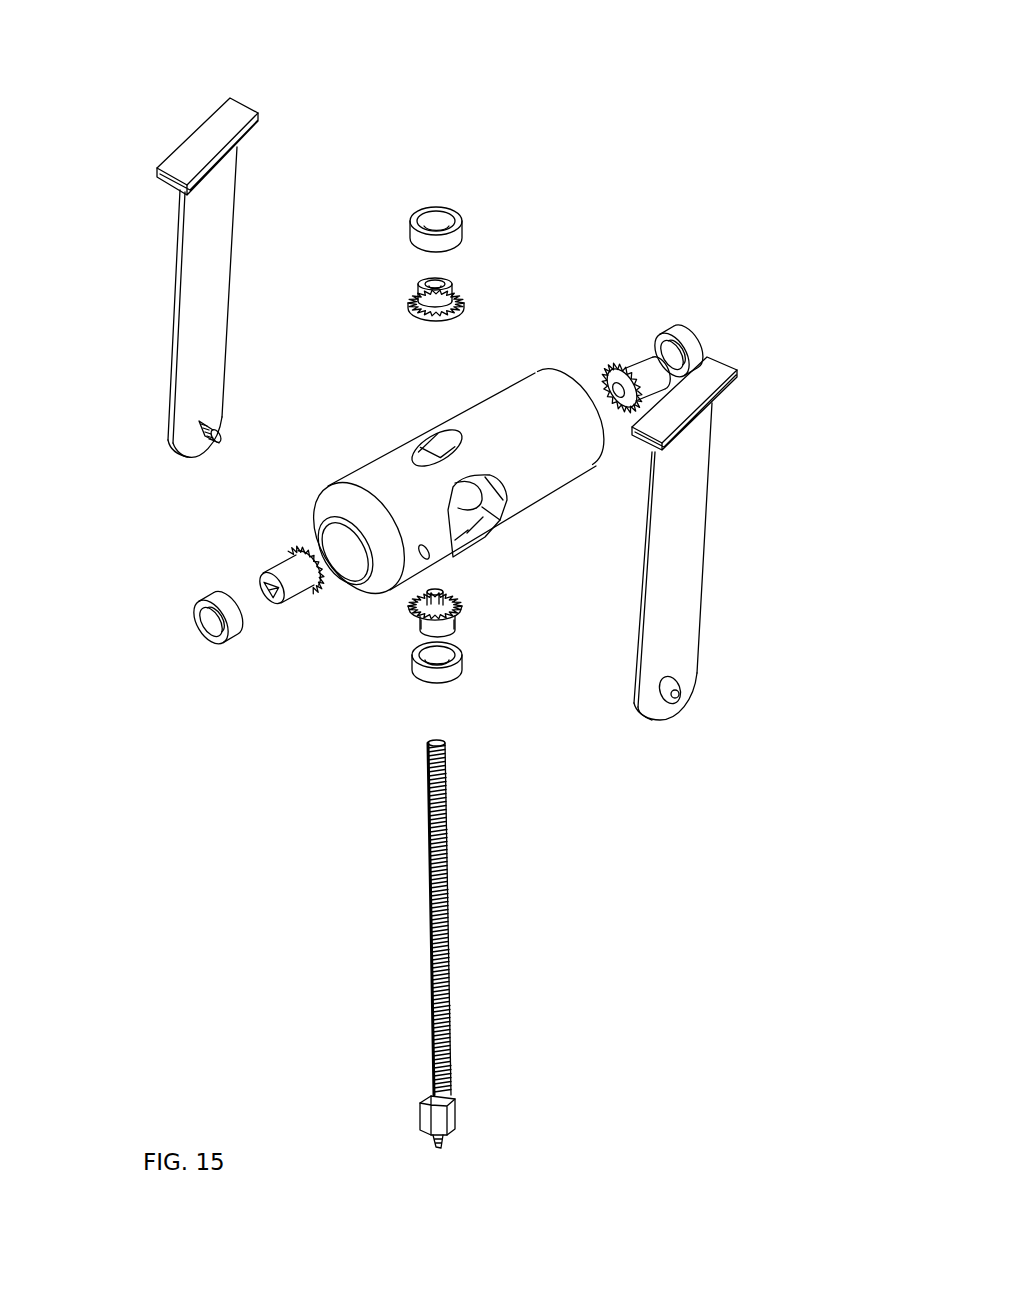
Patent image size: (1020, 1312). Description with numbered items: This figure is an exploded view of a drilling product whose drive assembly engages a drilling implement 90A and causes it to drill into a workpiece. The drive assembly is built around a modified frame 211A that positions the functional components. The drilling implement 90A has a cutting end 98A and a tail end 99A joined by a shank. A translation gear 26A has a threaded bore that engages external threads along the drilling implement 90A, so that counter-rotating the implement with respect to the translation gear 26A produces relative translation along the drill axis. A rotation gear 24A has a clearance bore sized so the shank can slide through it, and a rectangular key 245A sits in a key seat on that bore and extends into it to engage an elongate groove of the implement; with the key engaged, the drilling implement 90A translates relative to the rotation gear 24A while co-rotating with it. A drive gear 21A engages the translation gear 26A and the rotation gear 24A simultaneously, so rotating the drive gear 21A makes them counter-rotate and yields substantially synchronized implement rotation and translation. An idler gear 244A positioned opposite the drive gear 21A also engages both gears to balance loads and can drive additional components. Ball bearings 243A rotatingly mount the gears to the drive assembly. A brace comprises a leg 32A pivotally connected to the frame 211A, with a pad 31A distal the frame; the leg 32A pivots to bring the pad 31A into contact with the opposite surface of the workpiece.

The frame 211A is at (367, 462).
The pad 31A is at (195, 128).
The leg 32A is at (703, 566).
The ball bearing 243A is at (413, 212).
The translation gear 26A is at (457, 282).
The rectangular key 245A is at (403, 593).
The rotation gear 24A is at (457, 627).
The drive gear 21A is at (650, 360).
The idler gear 244A is at (280, 600).
The tail end 99A is at (432, 742).
The cutting end 98A is at (441, 1148).
The drilling implement 90A is at (508, 988).